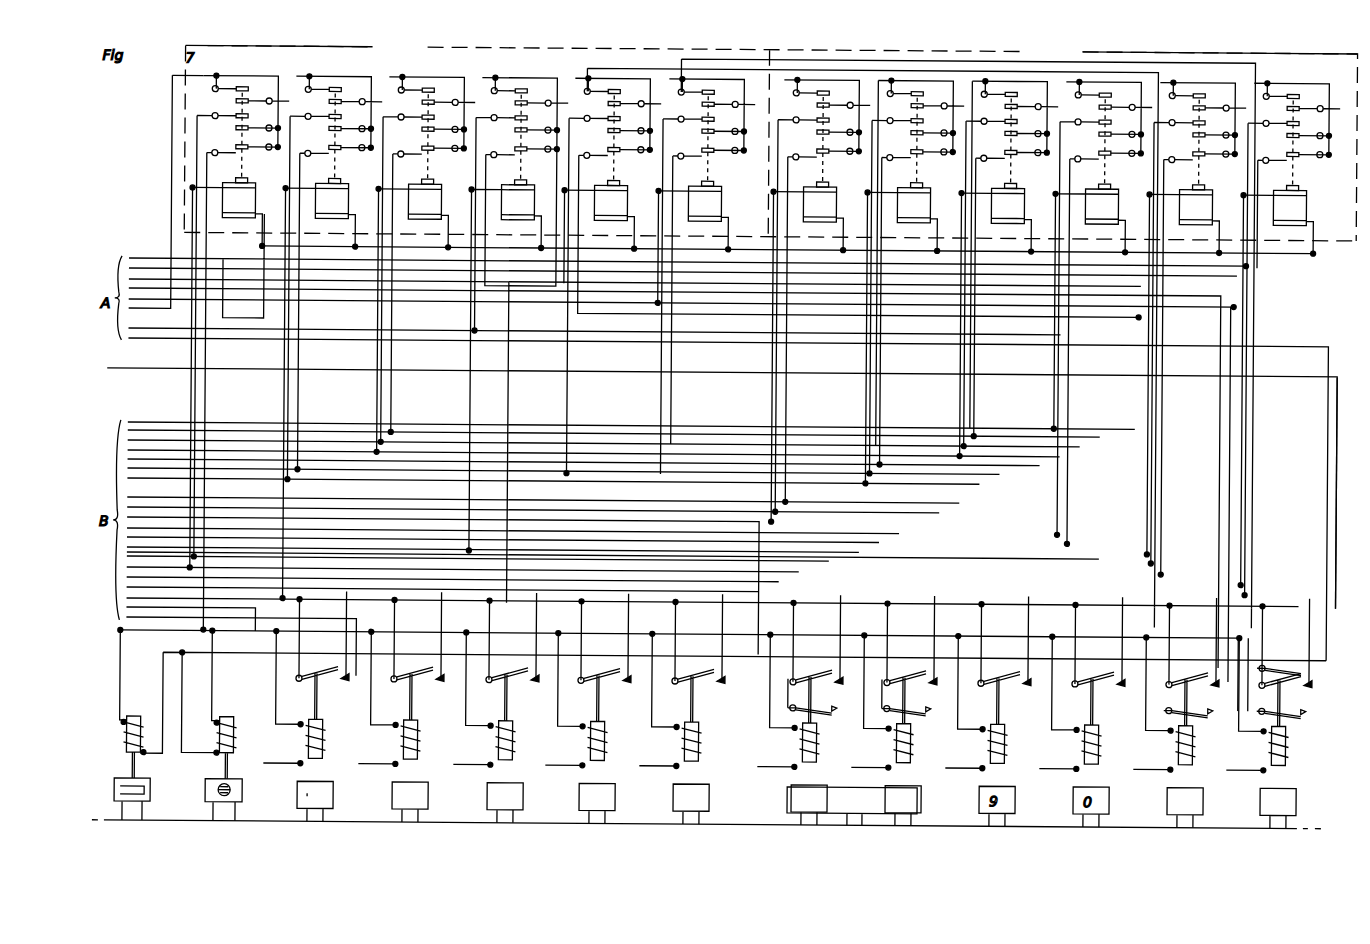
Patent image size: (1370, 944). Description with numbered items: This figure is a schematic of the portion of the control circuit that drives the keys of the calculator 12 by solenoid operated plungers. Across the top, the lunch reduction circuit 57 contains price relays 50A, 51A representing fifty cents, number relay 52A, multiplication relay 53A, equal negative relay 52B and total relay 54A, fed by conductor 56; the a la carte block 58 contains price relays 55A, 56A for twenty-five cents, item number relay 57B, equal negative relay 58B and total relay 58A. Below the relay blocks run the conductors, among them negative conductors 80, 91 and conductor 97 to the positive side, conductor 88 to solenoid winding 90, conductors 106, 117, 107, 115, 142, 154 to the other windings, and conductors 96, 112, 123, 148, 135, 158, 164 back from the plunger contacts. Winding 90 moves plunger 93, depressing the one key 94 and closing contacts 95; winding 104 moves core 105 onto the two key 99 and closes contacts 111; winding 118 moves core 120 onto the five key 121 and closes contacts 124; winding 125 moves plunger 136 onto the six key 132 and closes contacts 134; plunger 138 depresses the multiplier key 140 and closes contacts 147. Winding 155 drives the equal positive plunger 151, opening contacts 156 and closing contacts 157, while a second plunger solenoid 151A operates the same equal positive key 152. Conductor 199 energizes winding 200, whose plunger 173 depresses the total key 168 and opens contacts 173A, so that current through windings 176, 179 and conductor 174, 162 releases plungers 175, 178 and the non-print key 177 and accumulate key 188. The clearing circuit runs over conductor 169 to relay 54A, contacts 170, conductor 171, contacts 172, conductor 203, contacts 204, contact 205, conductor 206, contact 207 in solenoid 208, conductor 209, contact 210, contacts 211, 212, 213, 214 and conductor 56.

The calculator 12 is at (864, 856).
The conductor 56 is at (170, 232).
The lunch reduction circuit 57 is at (420, 54).
The a la carte price relay block 58 is at (1074, 54).
The relay 50A is at (258, 191).
The relay 51A is at (351, 191).
The multiplication relay 53A is at (444, 191).
The number relay 52A is at (537, 191).
The equal negative relay 52B is at (630, 191).
The total relay 54A is at (724, 191).
The price relay 55A is at (839, 191).
The price relay 56A is at (933, 191).
The item number relay 57B is at (1027, 191).
The equal negative relay 58B is at (1121, 191).
The total relay 58A is at (1309, 191).
The contacts 214 is at (244, 97).
The contacts 213 is at (337, 97).
The contacts 212 is at (430, 97).
The contacts 211 is at (523, 97).
The contact 205 is at (616, 97).
The contacts 170 is at (710, 97).
The contacts 204 is at (710, 129).
The contact 210 is at (585, 130).
The conductor 203 is at (675, 130).
The conductor 206 is at (585, 68).
The conductor 171 is at (679, 59).
The conductor 80 is at (689, 269).
The conductor 107 is at (563, 394).
The conductor 199 is at (1182, 318).
The conductor 115 is at (594, 332).
The conductor 169 is at (1288, 338).
The conductor 162 is at (1334, 564).
The conductor 209 is at (563, 256).
The conductor 142 is at (653, 552).
The conductor 148 is at (584, 462).
The conductor 164 is at (768, 616).
The conductor 158 is at (513, 531).
The conductor 154 is at (503, 540).
The conductor 135 is at (493, 549).
The conductor 117 is at (478, 558).
The conductor 123 is at (463, 569).
The conductor 106 is at (453, 579).
The conductor 112 is at (443, 589).
The conductor 97 is at (1200, 586).
The conductor 88 is at (190, 615).
The conductor 96 is at (241, 642).
The conductor 91 is at (120, 658).
The conductor 174 is at (165, 663).
The solenoid plunger 175 is at (145, 703).
The solenoid winding 176 is at (124, 753).
The non-print key 177 is at (153, 790).
The solenoid plunger 178 is at (238, 703).
The solenoid winding 179 is at (236, 752).
The accumulate key 188 is at (208, 796).
The solenoid winding 90 is at (308, 742).
The solenoid plunger 93 is at (316, 714).
The contacts 95 is at (340, 690).
The one key 94 is at (302, 796).
The solenoid winding 104 is at (404, 744).
The solenoid core 105 is at (411, 714).
The contacts 111 is at (436, 690).
The two key 99 is at (392, 796).
The solenoid winding 118 is at (494, 744).
The solenoid core 120 is at (506, 714).
The contacts 124 is at (526, 690).
The five key 121 is at (488, 796).
The solenoid winding 125 is at (586, 744).
The solenoid plunger 136 is at (598, 714).
The contacts 134 is at (618, 690).
The six key 132 is at (580, 796).
The solenoid plunger 138 is at (691, 714).
The contacts 147 is at (712, 690).
The multiplier key 140 is at (672, 796).
The contacts 156 is at (826, 724).
The contacts 157 is at (832, 662).
The equal positive plunger 151 is at (790, 723).
The winding 155 is at (794, 742).
The key plunger solenoid 151A is at (910, 722).
The equal positive key 152 is at (842, 782).
The solenoid 208 is at (1181, 748).
The contact 207 is at (1212, 704).
The contacts 172 is at (1310, 710).
The plunger 173 is at (1272, 722).
The contacts 173A is at (1296, 660).
The solenoid winding 200 is at (1272, 756).
The total key 168 is at (1264, 808).